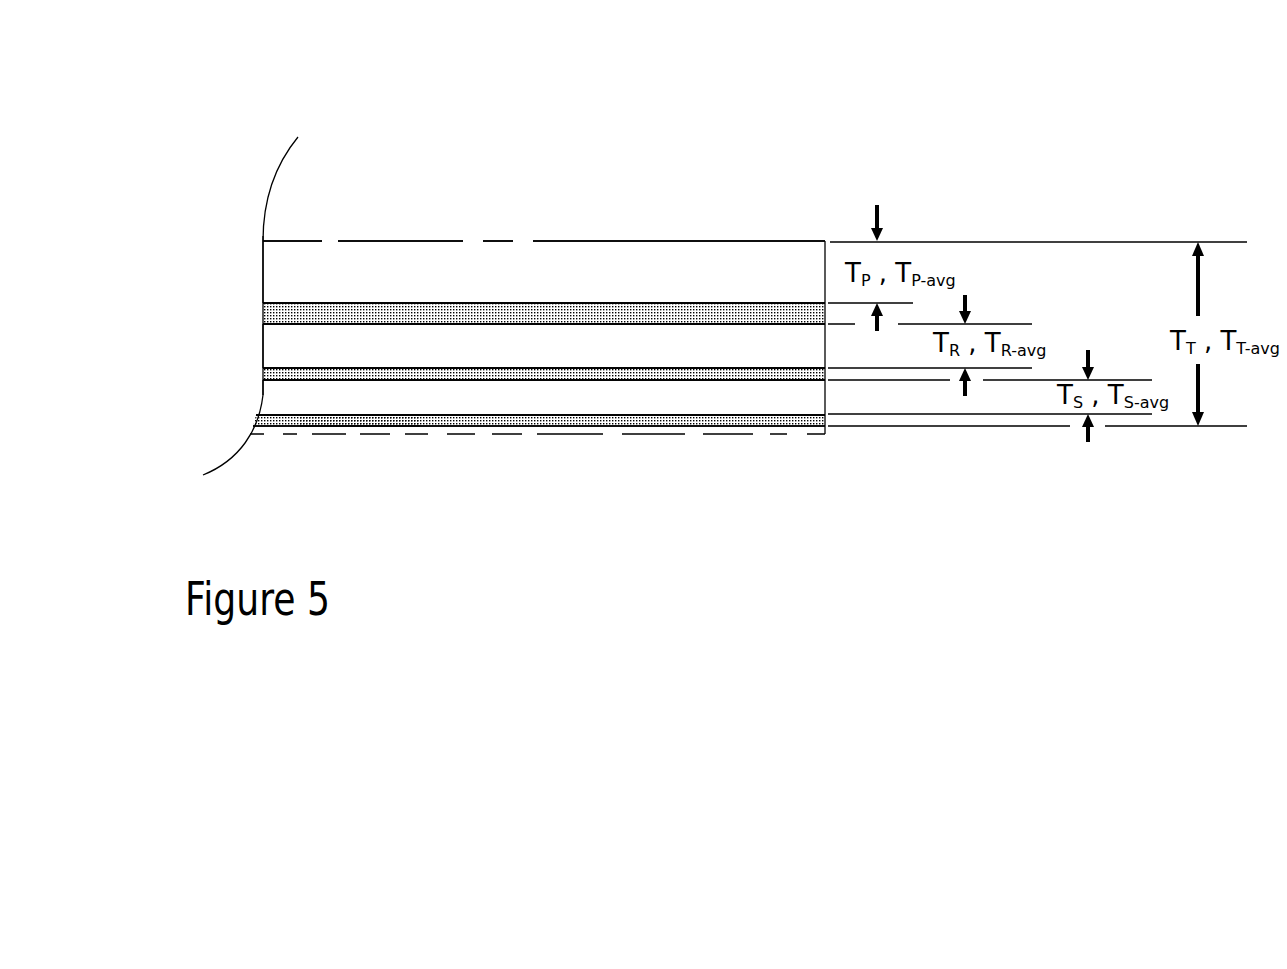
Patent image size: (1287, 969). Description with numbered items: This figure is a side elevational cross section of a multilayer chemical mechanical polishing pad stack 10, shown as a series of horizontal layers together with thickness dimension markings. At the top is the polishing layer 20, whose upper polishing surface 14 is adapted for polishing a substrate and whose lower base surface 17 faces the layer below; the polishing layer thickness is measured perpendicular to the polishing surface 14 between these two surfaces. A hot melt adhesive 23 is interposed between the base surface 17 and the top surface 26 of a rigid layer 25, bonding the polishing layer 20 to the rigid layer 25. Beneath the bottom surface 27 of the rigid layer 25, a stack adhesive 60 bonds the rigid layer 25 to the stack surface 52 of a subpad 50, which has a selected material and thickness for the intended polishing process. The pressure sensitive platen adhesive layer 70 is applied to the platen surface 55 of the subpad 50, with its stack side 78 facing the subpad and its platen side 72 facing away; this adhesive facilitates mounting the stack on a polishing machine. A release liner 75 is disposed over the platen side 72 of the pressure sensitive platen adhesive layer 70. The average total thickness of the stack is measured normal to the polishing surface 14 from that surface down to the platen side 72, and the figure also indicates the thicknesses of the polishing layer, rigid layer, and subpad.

The multilayer chemical mechanical polishing pad stack 10 is at (353, 77).
The polishing surface 14 is at (405, 240).
The base surface 17 is at (305, 302).
The polishing layer 20 is at (465, 272).
The hot melt adhesive 23 is at (490, 313).
The rigid layer 25 is at (723, 345).
The top surface 26 is at (660, 324).
The bottom surface 27 is at (773, 368).
The subpad 50 is at (477, 397).
The stack surface 52 is at (513, 380).
The platen surface 55 is at (435, 415).
The stack adhesive 60 is at (600, 373).
The pressure sensitive platen adhesive layer 70 is at (397, 420).
The platen side 72 is at (352, 417).
The release liner 75 is at (300, 427).
The stack side 78 is at (270, 415).